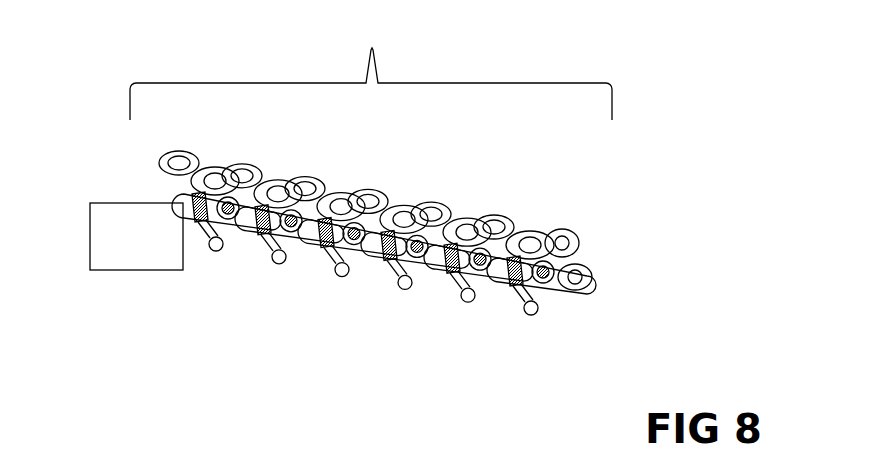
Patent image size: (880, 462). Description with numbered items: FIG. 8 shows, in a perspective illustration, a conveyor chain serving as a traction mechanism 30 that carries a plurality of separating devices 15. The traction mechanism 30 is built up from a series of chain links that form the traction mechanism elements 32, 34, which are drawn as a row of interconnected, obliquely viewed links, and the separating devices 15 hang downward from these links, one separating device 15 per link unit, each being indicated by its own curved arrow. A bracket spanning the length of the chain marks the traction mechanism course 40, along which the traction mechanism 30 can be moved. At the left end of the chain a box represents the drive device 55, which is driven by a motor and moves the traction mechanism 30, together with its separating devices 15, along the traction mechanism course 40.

The separating device 15 is at (203, 270).
The traction mechanism 30 is at (647, 285).
The traction mechanism element 32 is at (345, 182).
The traction mechanism element 34 is at (307, 198).
The traction mechanism course 40 is at (371, 67).
The drive device 55 is at (123, 208).